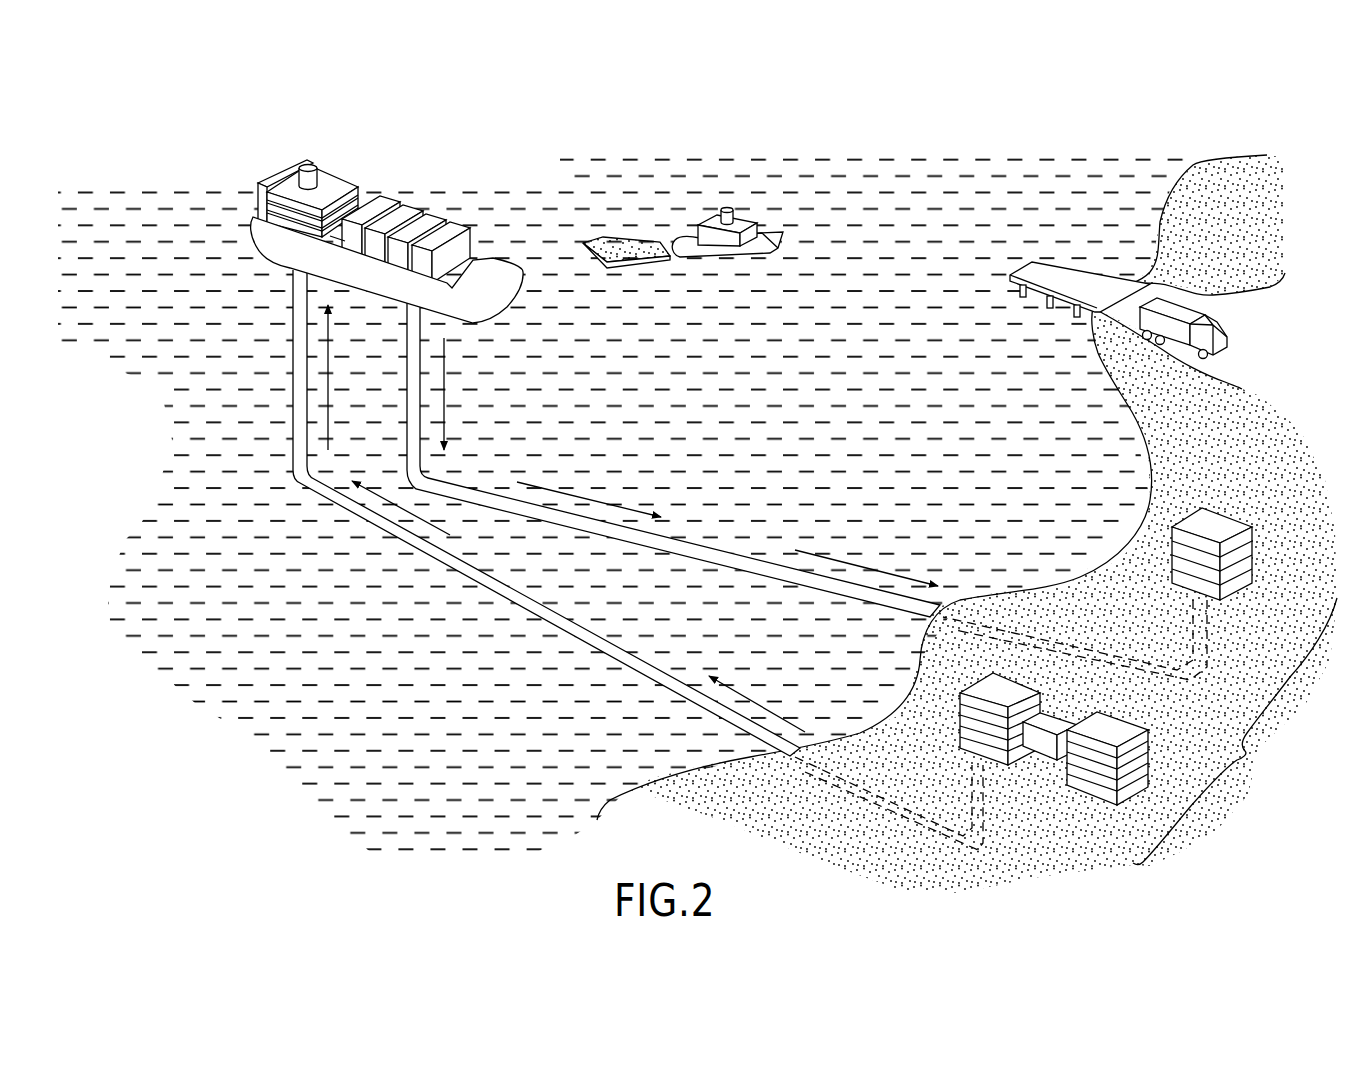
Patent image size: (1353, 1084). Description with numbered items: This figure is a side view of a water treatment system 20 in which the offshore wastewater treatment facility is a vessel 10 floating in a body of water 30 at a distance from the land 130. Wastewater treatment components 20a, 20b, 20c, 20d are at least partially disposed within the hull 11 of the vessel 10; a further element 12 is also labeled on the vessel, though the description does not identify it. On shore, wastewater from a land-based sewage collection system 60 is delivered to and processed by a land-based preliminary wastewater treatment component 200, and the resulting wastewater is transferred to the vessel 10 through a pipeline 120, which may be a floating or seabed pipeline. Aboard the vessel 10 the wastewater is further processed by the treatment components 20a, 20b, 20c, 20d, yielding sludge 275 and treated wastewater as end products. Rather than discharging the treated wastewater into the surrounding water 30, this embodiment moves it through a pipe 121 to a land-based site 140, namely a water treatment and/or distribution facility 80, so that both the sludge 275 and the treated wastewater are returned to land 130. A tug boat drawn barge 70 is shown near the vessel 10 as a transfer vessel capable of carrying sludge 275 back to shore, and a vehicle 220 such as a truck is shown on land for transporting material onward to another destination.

The vessel 10 is at (289, 281).
The hull 11 is at (273, 243).
The vessel deck 12 is at (337, 243).
The system 20 is at (1034, 151).
The wastewater treatment component 20a is at (478, 230).
The wastewater treatment component 20b is at (394, 236).
The wastewater treatment component 20c is at (417, 244).
The wastewater treatment component 20d is at (441, 252).
The body of water 30 is at (312, 603).
The land-based sewage collection system 60 is at (1100, 770).
The tug boat drawn barge 70 is at (740, 218).
The water treatment and/or distribution facility 80 is at (1215, 525).
The pipeline 120 is at (612, 662).
The pipe 121 is at (712, 555).
The land 130 is at (1233, 220).
The land-based facility 140 is at (1235, 731).
The land-based preliminary wastewater treatment component 200 is at (958, 742).
The vehicle 220 is at (1223, 313).
The sludge 275 is at (623, 247).